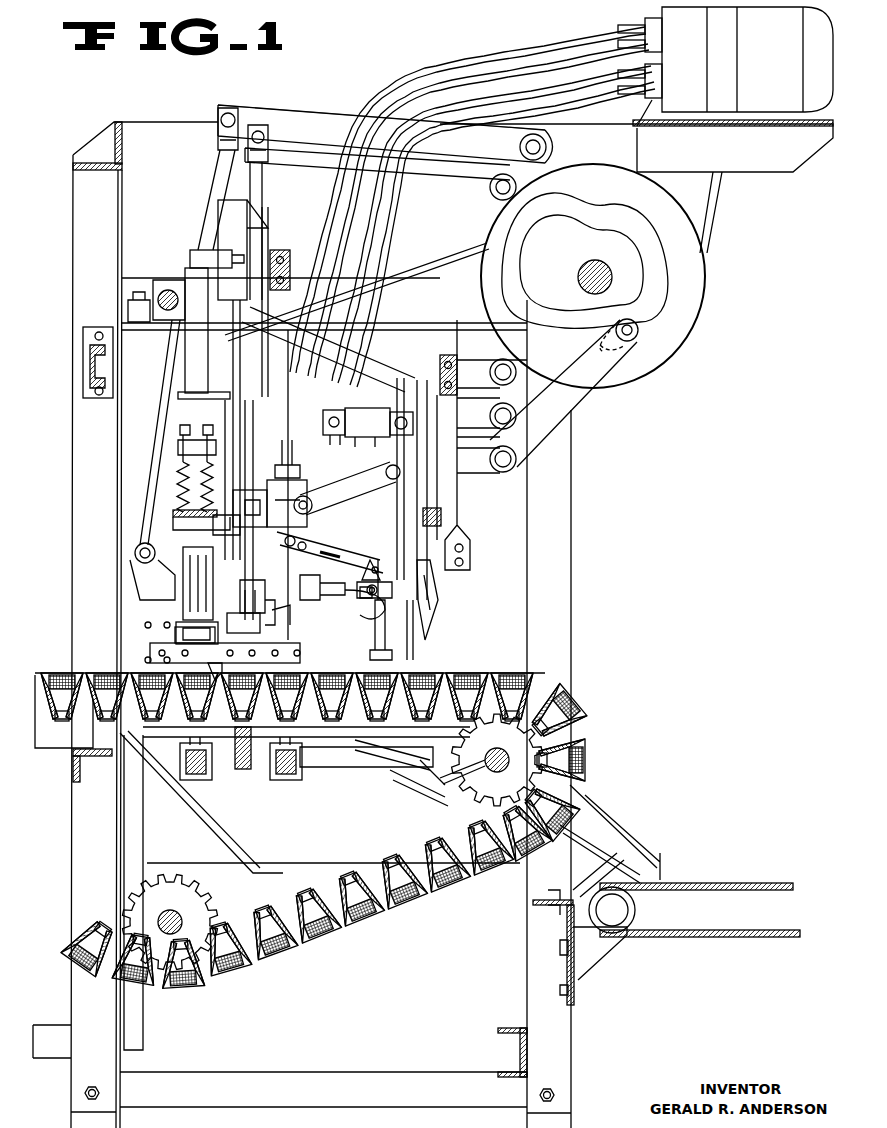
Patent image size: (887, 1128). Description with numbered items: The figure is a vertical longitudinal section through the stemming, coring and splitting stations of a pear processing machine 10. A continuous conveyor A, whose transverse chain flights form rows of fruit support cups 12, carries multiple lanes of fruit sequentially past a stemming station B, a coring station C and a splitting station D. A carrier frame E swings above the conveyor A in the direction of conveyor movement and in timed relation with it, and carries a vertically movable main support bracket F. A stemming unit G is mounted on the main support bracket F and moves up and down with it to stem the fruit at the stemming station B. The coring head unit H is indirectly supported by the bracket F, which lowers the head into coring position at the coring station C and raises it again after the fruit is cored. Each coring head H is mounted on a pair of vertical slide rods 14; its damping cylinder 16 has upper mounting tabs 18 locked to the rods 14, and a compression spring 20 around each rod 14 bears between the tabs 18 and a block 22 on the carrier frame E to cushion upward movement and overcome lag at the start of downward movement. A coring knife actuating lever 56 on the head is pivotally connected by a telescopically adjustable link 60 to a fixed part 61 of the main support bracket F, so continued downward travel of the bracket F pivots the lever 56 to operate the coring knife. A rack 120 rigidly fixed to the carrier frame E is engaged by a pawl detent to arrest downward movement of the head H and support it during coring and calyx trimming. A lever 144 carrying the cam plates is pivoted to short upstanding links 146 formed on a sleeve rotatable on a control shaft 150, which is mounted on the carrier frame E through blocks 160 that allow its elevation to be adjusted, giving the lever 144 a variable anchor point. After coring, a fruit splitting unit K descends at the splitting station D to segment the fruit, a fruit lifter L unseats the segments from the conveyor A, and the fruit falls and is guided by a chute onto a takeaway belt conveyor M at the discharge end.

The pear processing machine 10 is at (345, 95).
The fruit support cups 12 is at (127, 676).
The slide rods 14 is at (268, 382).
The damping cylinder 16 is at (262, 530).
The upper mounting tabs 18 is at (233, 482).
The compression spring 20 is at (257, 458).
The block 22 is at (257, 447).
The coring knife actuating lever 56 is at (340, 495).
The telescopically adjustable link 60 is at (356, 427).
The fixed part of the main support bracket 61 is at (398, 400).
The rack 120 is at (263, 637).
The lever 144 is at (345, 548).
The short upstanding links 146 is at (375, 572).
The control shaft 150 is at (380, 600).
The blocks 160 is at (315, 598).
The continuous conveyor A is at (585, 745).
The stemming station B is at (193, 668).
The coring station C is at (285, 668).
The splitting station D is at (438, 665).
The carrier frame E is at (467, 513).
The main support bracket F is at (320, 332).
The stemming unit G is at (187, 542).
The coring head unit H is at (220, 523).
The fruit splitting unit K is at (442, 593).
The fruit lifter L is at (393, 775).
The takeaway belt conveyor M is at (707, 882).